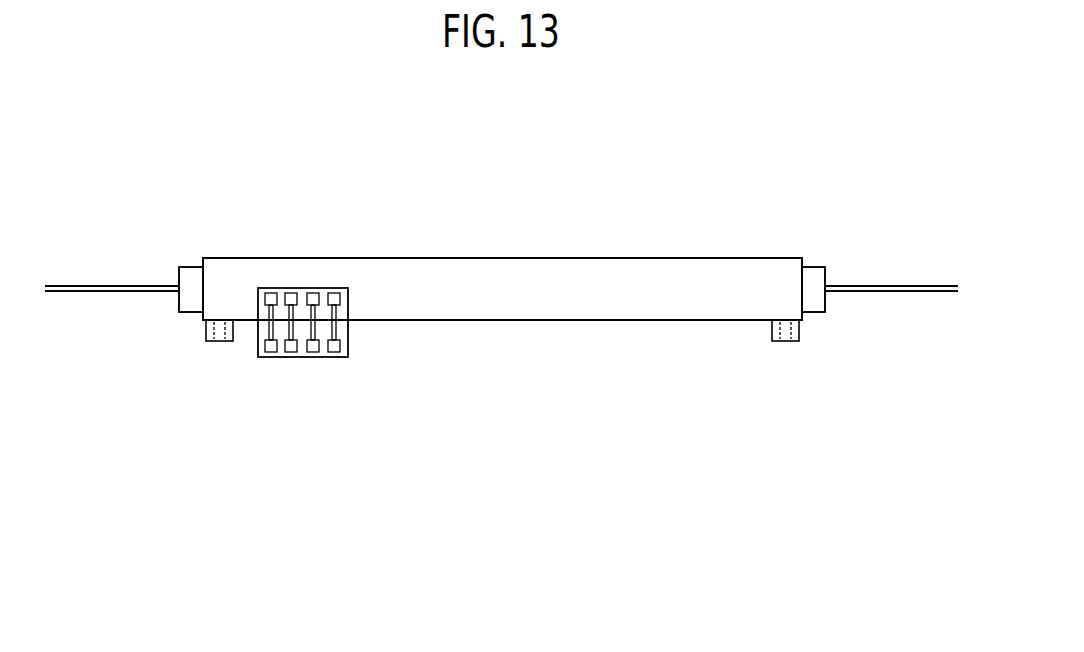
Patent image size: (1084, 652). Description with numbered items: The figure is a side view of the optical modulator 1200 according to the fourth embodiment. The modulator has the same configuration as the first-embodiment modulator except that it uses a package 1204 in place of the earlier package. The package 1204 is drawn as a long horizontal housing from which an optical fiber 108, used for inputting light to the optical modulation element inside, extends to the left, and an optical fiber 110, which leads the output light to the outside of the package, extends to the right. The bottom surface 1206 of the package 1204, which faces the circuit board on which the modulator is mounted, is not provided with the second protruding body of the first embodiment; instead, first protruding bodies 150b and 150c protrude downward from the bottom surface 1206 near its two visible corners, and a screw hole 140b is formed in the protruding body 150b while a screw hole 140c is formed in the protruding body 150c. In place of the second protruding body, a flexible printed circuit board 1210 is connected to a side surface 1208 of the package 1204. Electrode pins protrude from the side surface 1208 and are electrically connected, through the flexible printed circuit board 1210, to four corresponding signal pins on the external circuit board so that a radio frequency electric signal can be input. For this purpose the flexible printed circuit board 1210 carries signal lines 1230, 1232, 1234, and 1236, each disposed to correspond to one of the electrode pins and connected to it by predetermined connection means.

The optical modulator 1200 is at (700, 162).
The package 1204 is at (502, 206).
The side surface 1208 is at (502, 219).
The bottom surface 1206 is at (502, 363).
The optical fiber 108 is at (112, 233).
The optical fiber 110 is at (891, 231).
The screw hole 140b is at (175, 363).
The protruding body 150b is at (133, 308).
The screw hole 140c is at (805, 367).
The protruding body 150c is at (757, 340).
The flexible printed circuit board 1210 is at (361, 371).
The signal line 1230 is at (218, 384).
The signal line 1232 is at (264, 368).
The signal line 1234 is at (284, 412).
The signal line 1236 is at (346, 378).